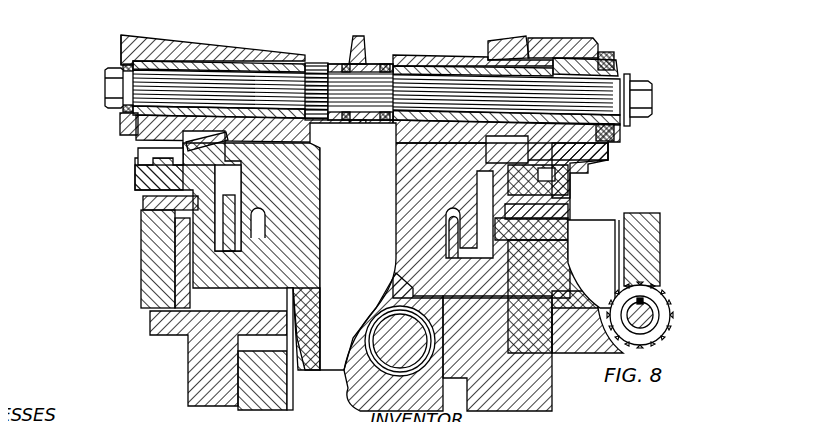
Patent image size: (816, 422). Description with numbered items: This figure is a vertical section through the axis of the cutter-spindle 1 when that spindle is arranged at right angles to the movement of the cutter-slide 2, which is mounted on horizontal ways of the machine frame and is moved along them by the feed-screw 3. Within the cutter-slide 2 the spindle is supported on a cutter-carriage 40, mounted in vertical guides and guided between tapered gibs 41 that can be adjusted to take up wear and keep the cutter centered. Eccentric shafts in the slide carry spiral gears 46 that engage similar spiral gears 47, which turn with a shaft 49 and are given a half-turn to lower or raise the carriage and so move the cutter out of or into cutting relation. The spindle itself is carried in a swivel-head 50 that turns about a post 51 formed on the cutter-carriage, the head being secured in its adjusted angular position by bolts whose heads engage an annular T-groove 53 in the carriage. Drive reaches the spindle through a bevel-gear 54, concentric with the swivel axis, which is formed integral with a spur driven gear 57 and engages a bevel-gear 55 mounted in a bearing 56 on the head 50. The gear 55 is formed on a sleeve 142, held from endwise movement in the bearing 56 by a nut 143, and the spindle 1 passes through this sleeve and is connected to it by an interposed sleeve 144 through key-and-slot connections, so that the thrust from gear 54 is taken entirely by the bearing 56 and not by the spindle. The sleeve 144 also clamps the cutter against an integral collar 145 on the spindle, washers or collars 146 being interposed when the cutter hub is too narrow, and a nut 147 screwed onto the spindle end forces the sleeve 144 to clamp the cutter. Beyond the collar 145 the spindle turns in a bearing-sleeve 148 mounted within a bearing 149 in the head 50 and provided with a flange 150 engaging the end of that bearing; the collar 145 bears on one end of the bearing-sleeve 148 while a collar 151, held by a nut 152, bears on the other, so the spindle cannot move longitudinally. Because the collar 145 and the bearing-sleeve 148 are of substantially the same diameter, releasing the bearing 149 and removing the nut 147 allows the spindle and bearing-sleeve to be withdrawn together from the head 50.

The cutter-spindle 1 is at (600, 97).
The cutter-slide 2 is at (135, 273).
The feed-screw 3 is at (380, 352).
The cutter-carriage 40 is at (548, 207).
The tapered gibs 41 is at (170, 240).
The spiral gears 46 is at (652, 236).
The spiral gears 47 is at (658, 306).
The shaft 49 is at (660, 320).
The swivel-head 50 is at (583, 153).
The post 51 is at (386, 224).
The annular T-groove 53 is at (130, 166).
The bevel-gear 54 is at (133, 147).
The bevel-gear 55 is at (490, 33).
The bearing 56 is at (540, 36).
The driven gear 57 is at (167, 205).
The sleeve 142 is at (607, 66).
The nut 143 is at (598, 52).
The sleeve 144 is at (612, 118).
The collar 145 is at (310, 55).
The washers or collars 146 is at (337, 53).
The nut 147 is at (643, 80).
The bearing-sleeve 148 is at (265, 50).
The bearing 149 is at (190, 42).
The flange 150 is at (113, 38).
The collar 151 is at (112, 56).
The nut 152 is at (100, 80).